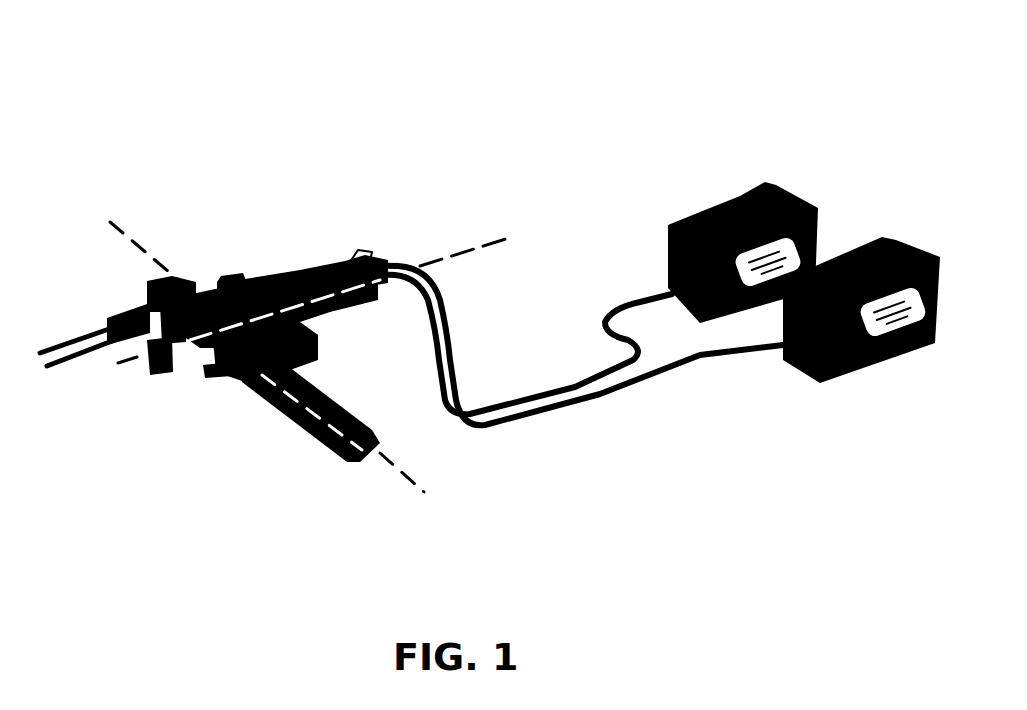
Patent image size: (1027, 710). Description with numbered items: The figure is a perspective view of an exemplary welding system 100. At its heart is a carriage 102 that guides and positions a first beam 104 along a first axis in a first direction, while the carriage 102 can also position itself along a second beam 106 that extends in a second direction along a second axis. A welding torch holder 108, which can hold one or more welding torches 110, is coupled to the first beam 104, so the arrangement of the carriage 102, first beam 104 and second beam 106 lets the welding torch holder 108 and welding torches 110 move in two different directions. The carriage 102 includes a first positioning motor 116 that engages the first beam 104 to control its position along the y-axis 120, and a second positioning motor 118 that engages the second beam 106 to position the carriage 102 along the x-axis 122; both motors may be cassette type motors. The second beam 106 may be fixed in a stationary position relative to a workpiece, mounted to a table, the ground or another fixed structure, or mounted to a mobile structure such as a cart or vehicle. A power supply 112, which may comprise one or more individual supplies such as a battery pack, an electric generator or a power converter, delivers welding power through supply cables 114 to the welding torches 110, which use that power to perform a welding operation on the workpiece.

The welding system 100 is at (298, 97).
The carriage 102 is at (220, 391).
The first beam 104 is at (330, 317).
The second beam 106 is at (290, 410).
The welding torch holder 108 is at (140, 293).
The welding torches 110 is at (86, 376).
The power supply 112 is at (684, 187).
The supply cables 114 is at (538, 400).
The first positioning motor 116 is at (240, 283).
The second positioning motor 118 is at (310, 366).
The y-axis 120 is at (439, 250).
The x-axis 122 is at (415, 487).